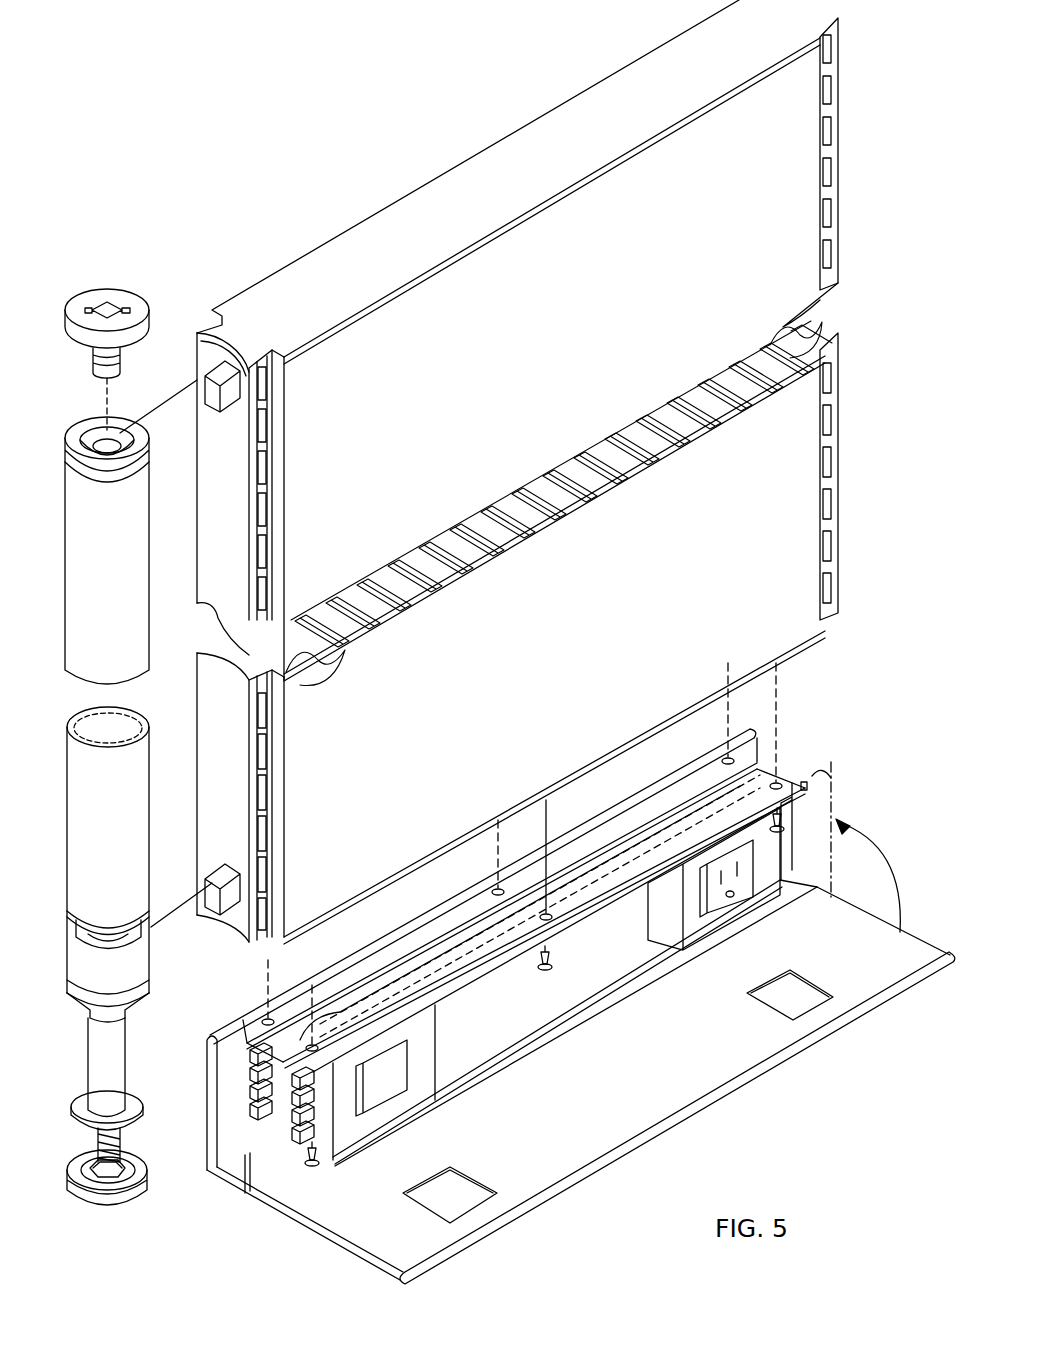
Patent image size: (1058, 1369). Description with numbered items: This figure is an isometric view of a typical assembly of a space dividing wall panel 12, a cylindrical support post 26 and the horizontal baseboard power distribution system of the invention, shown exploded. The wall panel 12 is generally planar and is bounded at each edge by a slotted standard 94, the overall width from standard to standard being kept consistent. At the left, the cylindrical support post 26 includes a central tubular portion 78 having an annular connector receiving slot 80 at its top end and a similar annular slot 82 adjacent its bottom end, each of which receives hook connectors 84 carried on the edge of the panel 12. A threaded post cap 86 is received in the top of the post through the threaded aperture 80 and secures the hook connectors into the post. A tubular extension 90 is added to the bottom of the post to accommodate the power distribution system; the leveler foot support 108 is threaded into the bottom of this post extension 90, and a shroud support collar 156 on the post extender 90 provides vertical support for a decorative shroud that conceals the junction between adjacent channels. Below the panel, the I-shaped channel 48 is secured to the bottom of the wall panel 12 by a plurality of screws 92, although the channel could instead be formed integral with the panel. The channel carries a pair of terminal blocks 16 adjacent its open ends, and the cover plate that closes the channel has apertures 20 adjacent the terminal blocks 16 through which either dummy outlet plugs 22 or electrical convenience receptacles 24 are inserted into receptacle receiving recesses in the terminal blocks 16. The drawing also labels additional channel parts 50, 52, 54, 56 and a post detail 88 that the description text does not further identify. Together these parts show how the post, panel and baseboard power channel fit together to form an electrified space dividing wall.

The wall panel 12 is at (516, 400).
The terminal blocks 16 is at (420, 1027).
The apertures 20 is at (470, 1187).
The dummy outlet plugs 22 is at (378, 1080).
The electrical convenience receptacles 24 is at (713, 886).
The cylindrical support post 26 is at (88, 530).
The I-shaped channel 48 is at (268, 1187).
The front flange 50 is at (280, 1208).
The end plate 52 is at (207, 1175).
The rear wall 54 is at (590, 823).
The mounting hole 56 is at (808, 780).
The central tubular portion 78 is at (130, 562).
The annular connector receiving slot 80 is at (121, 435).
The annular slot 82 is at (150, 927).
The hook connectors 84 is at (205, 367).
The threaded post cap 86 is at (130, 302).
The recess 88 is at (97, 428).
The tubular extension 90 is at (120, 1062).
The screws 92 is at (542, 962).
The slotted standard 94 is at (208, 488).
The foot support 108 is at (128, 1200).
The shroud support collar 156 is at (136, 1120).